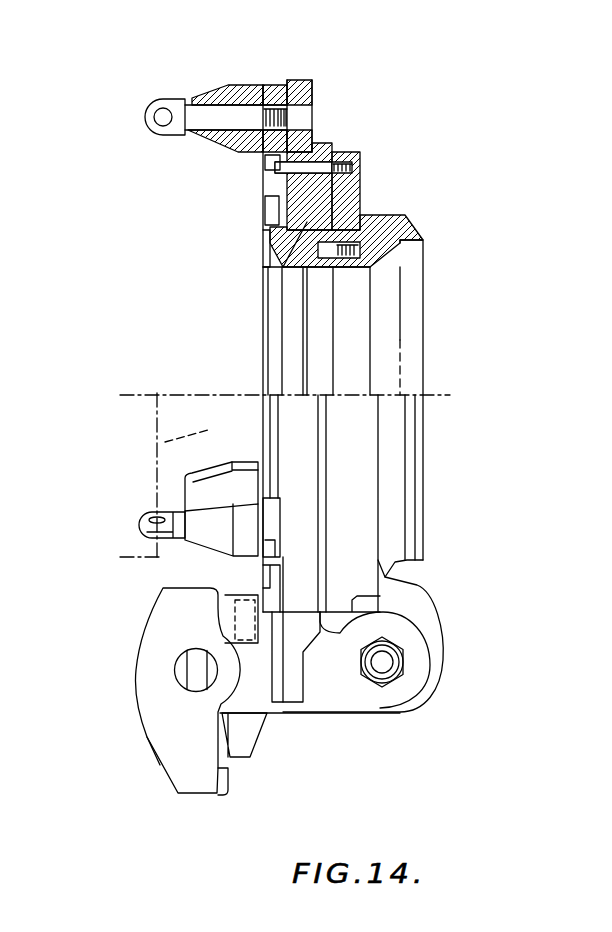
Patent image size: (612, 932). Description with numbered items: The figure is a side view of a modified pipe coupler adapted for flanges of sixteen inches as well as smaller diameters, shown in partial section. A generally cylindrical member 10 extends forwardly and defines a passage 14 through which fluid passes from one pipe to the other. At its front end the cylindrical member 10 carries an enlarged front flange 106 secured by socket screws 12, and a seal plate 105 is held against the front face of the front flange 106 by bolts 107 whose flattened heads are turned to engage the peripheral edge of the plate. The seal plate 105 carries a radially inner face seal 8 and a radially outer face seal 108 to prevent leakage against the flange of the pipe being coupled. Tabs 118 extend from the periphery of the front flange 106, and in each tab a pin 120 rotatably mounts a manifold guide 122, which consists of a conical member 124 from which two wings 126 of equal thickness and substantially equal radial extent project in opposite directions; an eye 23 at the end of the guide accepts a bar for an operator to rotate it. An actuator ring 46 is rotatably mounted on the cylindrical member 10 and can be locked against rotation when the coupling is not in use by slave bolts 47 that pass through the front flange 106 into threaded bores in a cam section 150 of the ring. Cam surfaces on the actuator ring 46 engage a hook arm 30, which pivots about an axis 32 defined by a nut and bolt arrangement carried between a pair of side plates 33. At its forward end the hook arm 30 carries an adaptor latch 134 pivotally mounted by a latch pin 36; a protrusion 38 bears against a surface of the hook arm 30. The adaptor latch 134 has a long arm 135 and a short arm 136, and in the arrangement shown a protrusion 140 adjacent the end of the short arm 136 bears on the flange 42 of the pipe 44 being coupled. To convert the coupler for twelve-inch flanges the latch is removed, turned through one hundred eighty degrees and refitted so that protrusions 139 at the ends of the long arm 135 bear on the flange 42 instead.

The face seal 8 is at (263, 240).
The cylindrical member 10 is at (423, 238).
The socket screws 12 is at (307, 250).
The passage 14 is at (377, 333).
The eye 23 is at (157, 118).
The hook arm 30 is at (250, 740).
The axis 32 is at (385, 662).
The side plates 33 is at (418, 605).
The latch pin 36 is at (192, 669).
The protrusion 38 is at (230, 773).
The pipe flange 42 is at (258, 710).
The pipe 44 is at (160, 445).
The actuator ring 46 is at (377, 220).
The slave bolts 47 is at (355, 172).
The seal plate 105 is at (277, 250).
The front flange 106 is at (307, 152).
The bolts 107 is at (278, 588).
The face seal 108 is at (262, 203).
The tabs 118 is at (297, 77).
The pin 120 is at (320, 127).
The manifold guide 122 is at (212, 96).
The conical member 124 is at (243, 90).
The wings 126 is at (183, 478).
The adaptor latch 134 is at (146, 690).
The long arm 135 is at (177, 771).
The short arm 136 is at (155, 645).
The protrusions 139 is at (226, 796).
The protrusion 140 is at (160, 640).
The cam section 150 is at (350, 142).